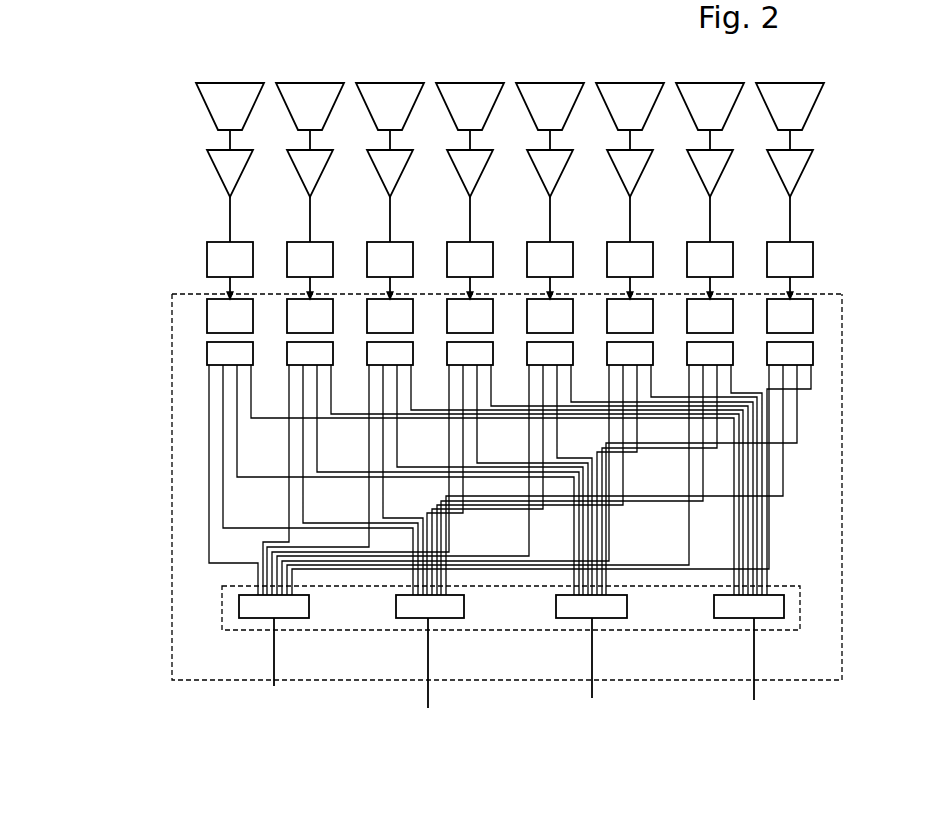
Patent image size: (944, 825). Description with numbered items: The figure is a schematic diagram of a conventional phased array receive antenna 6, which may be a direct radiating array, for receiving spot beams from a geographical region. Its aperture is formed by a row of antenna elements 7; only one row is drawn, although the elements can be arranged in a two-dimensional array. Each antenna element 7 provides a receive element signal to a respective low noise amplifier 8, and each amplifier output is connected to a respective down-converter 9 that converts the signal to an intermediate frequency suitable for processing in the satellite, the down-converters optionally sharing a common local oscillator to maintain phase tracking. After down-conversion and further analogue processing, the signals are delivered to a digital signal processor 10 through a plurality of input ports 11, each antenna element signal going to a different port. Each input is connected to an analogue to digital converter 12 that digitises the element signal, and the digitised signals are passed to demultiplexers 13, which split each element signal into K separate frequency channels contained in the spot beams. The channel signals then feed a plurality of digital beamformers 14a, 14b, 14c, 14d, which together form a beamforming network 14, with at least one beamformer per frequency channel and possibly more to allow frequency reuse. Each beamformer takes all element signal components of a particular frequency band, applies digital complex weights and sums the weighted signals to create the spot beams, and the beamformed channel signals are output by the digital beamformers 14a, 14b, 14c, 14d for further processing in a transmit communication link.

The phased array receive antenna 6 is at (237, 56).
The antenna elements 7 is at (230, 104).
The low noise amplifier 8 is at (230, 172).
The down-converter 9 is at (230, 259).
The digital signal processor 10 is at (172, 462).
The input ports 11 is at (230, 294).
The analogue to digital converter 12 is at (230, 323).
The demultiplexers 13 is at (230, 353).
The beamforming network 14 is at (222, 598).
The digital beamformer 14a is at (253, 612).
The digital beamformer 14b is at (412, 609).
The digital beamformer 14c is at (578, 614).
The digital beamformer 14d is at (732, 613).